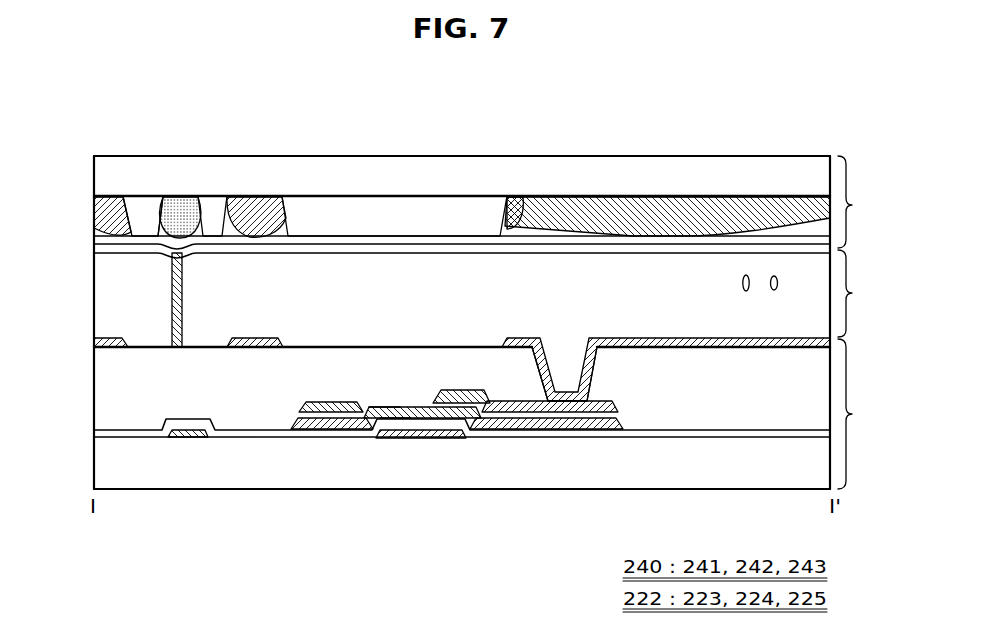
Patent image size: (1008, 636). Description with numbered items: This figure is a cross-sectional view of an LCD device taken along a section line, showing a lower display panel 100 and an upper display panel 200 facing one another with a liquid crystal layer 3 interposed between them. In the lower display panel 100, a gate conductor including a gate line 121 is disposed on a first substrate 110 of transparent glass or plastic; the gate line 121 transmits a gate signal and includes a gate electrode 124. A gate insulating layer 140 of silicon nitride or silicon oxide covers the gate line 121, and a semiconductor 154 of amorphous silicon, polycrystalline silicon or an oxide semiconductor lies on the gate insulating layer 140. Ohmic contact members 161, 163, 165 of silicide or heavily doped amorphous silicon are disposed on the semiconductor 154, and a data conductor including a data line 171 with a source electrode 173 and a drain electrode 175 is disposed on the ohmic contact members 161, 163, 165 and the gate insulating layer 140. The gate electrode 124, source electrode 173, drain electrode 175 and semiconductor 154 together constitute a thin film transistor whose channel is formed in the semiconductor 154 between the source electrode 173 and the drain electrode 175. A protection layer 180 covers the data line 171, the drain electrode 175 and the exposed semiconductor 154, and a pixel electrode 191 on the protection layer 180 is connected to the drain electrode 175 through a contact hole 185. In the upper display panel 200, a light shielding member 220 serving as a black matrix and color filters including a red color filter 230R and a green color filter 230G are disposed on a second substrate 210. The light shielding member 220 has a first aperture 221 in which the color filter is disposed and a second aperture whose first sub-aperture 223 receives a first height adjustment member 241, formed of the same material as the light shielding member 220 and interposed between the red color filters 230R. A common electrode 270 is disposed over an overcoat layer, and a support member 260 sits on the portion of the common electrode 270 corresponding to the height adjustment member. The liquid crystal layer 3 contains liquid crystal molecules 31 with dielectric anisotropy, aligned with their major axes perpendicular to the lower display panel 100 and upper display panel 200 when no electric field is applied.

The liquid crystal layer 3 is at (852, 293).
The liquid crystal molecule 31 is at (746, 276).
The lower display panel 100 is at (863, 414).
The first substrate 110 is at (795, 465).
The gate line 121 is at (185, 440).
The gate electrode 124 is at (422, 432).
The gate insulating layer 140 is at (703, 432).
The semiconductor 154 is at (442, 414).
The ohmic contact member 161 is at (330, 418).
The ohmic contact member 163 is at (397, 412).
The ohmic contact member 165 is at (533, 414).
The data line 171 is at (310, 408).
The source electrode 173 is at (387, 402).
The drain electrode 175 is at (455, 392).
The protection layer 180 is at (742, 400).
The contact hole 185 is at (583, 373).
The pixel electrode 191 is at (105, 340).
The upper display panel 200 is at (863, 202).
The second substrate 210 is at (580, 175).
The light shielding member 220 is at (213, 210).
The first aperture 221 is at (518, 210).
The first sub-aperture 223 is at (162, 203).
The red color filter 230R is at (255, 212).
The green color filter 230G is at (660, 208).
The first height adjustment member 241 is at (177, 207).
The support member 260 is at (172, 300).
The common electrode 270 is at (442, 252).